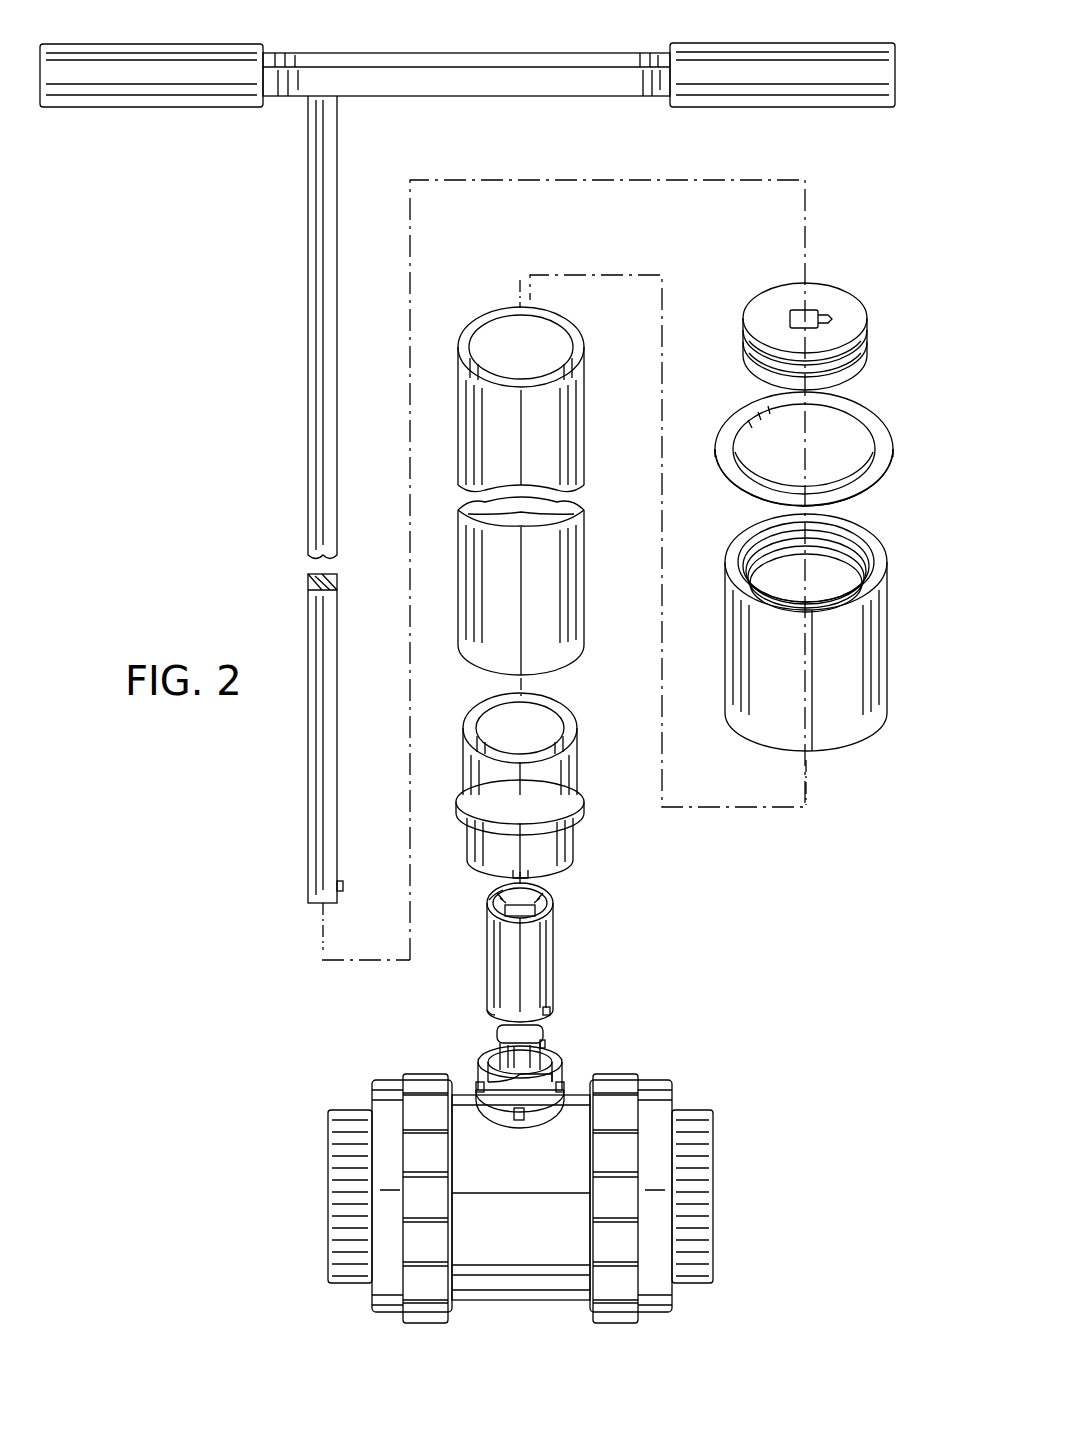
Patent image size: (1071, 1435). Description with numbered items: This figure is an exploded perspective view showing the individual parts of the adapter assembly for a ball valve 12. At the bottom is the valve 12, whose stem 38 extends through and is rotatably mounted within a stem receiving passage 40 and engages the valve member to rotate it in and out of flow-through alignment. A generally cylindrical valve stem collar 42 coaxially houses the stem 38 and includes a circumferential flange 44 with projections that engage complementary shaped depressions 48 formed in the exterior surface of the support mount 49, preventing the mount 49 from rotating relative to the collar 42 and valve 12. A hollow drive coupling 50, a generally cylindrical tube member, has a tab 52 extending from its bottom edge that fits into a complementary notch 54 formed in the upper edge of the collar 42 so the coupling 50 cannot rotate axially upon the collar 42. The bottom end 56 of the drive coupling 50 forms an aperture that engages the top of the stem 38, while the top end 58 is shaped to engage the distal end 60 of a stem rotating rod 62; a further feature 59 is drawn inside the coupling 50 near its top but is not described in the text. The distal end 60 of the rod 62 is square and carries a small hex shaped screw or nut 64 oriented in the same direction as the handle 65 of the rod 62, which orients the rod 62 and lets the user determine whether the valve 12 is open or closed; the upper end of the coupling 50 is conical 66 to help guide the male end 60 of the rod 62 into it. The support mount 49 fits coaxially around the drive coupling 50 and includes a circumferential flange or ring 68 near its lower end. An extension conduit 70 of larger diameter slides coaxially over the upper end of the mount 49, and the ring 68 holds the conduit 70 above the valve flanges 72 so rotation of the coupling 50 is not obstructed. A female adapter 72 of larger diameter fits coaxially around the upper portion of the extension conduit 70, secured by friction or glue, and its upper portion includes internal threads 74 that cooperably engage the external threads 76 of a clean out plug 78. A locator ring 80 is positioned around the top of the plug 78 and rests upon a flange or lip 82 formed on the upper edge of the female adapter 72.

The ball valve 12 is at (626, 908).
The stem 38 is at (538, 1045).
The stem receiving passage 40 is at (565, 1088).
The valve stem collar 42 is at (480, 1085).
The circumferential flange 44 is at (518, 1120).
The depressions 48 is at (505, 872).
The support mount 49 is at (546, 794).
The drive coupling 50 is at (527, 943).
The tab 52 is at (552, 1007).
The notch 54 is at (560, 1055).
The bottom end 56 is at (555, 897).
The top end 58 is at (492, 1013).
The key 59 is at (515, 916).
The distal end 60 is at (318, 905).
The stem rotating rod 62 is at (316, 372).
The hex shaped screw or nut 64 is at (344, 886).
The handle 65 is at (562, 53).
The conical upper end 66 is at (492, 893).
The circumferential flange or ring 68 is at (578, 792).
The extension conduit 70 is at (480, 420).
The female adapter 72 is at (428, 1085).
The internal threads 74 is at (775, 537).
The external threads 76 is at (778, 313).
The clean out plug 78 is at (778, 296).
The locator ring 80 is at (740, 418).
The flange or lip 82 is at (878, 560).